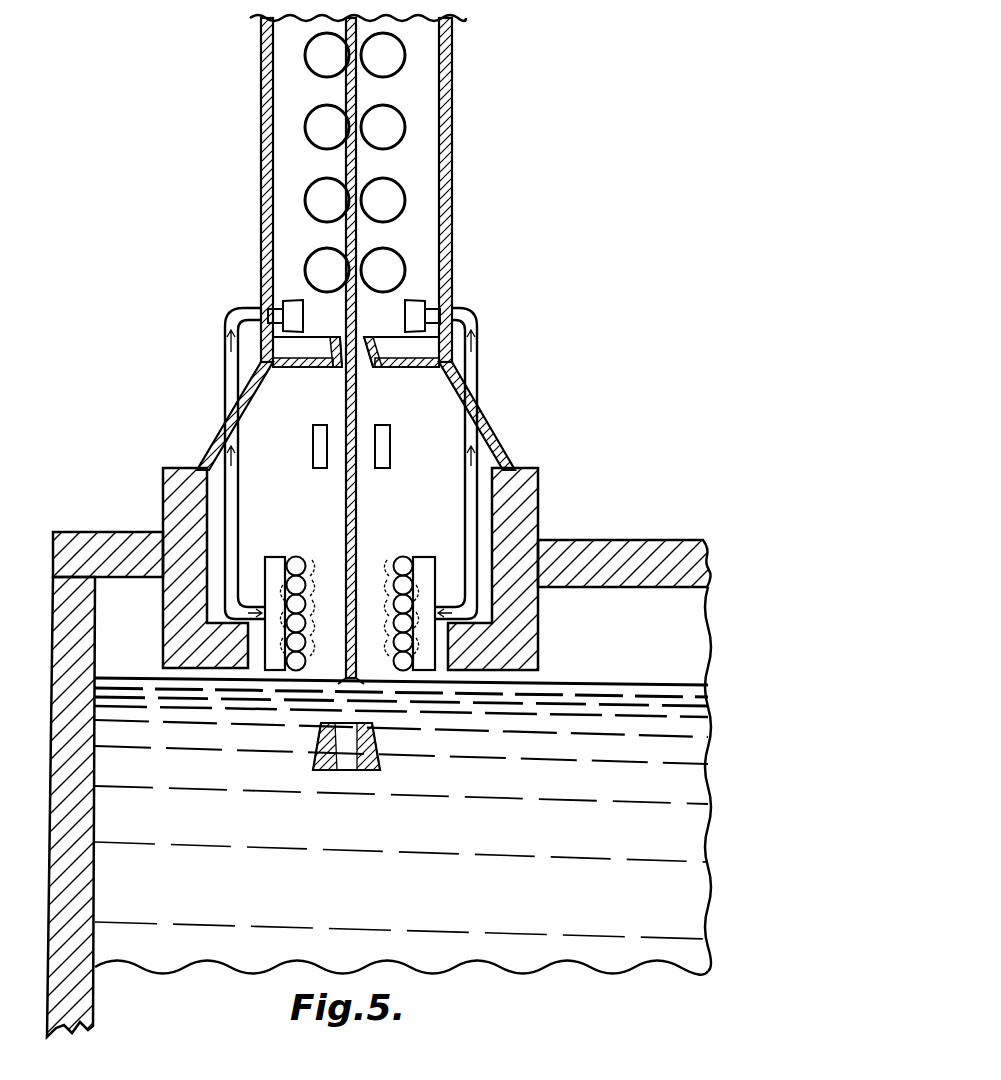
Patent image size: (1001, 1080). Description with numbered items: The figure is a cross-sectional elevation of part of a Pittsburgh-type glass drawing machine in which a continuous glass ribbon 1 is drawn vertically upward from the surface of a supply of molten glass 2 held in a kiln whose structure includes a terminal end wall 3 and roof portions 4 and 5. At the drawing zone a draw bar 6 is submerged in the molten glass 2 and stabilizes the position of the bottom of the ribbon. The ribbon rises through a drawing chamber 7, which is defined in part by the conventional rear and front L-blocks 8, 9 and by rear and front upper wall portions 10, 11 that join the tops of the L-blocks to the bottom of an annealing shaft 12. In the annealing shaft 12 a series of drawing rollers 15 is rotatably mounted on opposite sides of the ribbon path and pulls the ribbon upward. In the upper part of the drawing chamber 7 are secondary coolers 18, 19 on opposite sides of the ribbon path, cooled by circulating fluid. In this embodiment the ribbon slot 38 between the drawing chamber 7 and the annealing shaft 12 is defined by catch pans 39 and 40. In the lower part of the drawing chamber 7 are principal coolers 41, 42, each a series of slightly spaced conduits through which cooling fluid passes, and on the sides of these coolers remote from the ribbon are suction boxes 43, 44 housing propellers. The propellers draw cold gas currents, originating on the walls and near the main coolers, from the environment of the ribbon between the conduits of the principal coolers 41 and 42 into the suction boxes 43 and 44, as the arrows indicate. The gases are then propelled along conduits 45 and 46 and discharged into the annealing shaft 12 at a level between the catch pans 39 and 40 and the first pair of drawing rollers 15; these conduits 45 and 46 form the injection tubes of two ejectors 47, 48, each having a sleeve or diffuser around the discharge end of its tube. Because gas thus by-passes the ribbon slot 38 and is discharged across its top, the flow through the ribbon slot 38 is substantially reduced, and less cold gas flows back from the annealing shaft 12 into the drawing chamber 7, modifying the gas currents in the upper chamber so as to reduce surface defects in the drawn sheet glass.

The central partition wall 1 is at (356, 508).
The molten glass 2 is at (362, 903).
The terminal end wall 3 is at (75, 762).
The roof portion 4 is at (100, 556).
The roof portion 5 is at (638, 568).
The draw bar 6 is at (326, 771).
The drawing chamber 7 is at (435, 489).
The rear L-block 8 is at (190, 512).
The front L-block 9 is at (505, 510).
The rear upper wall portion 10 is at (236, 408).
The front upper wall portion 11 is at (482, 428).
The annealing shaft 12 is at (462, 204).
The drawing rollers 15 is at (320, 123).
The secondary cooler 18 is at (320, 448).
The secondary cooler 19 is at (382, 450).
The ribbon slot 38 is at (368, 343).
The catch pan 39 is at (300, 347).
The catch pan 40 is at (400, 348).
The principal cooler 41 is at (298, 565).
The principal cooler 42 is at (402, 565).
The suction box 43 is at (277, 570).
The suction box 44 is at (424, 570).
The conduit 45 is at (230, 361).
The conduit 46 is at (478, 370).
The ejector 47 is at (276, 305).
The ejector 48 is at (420, 322).